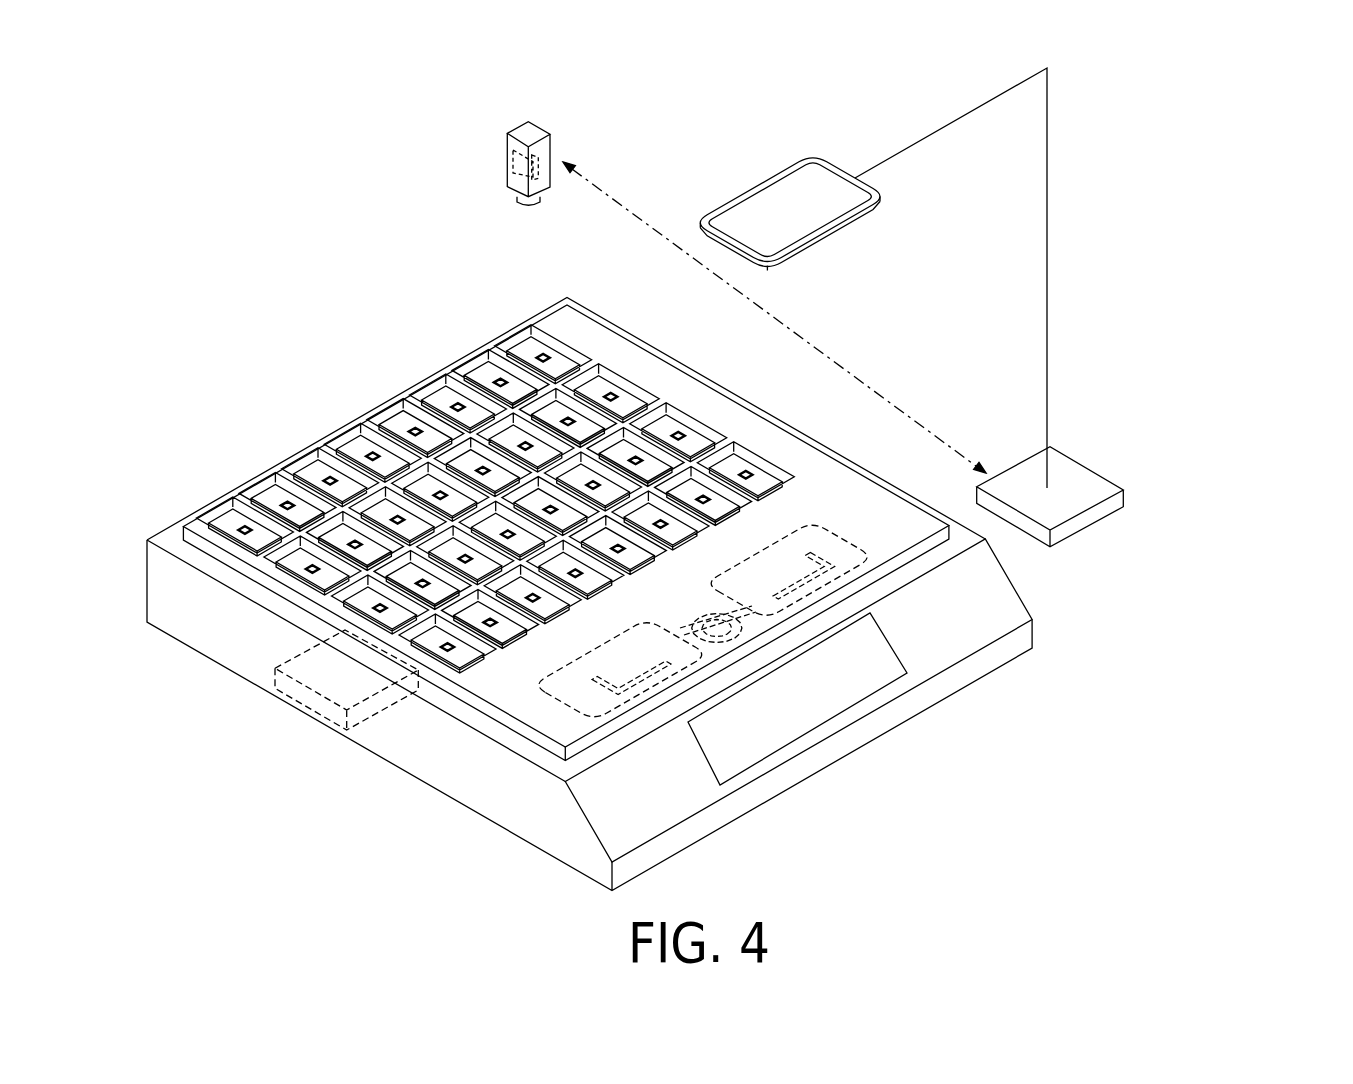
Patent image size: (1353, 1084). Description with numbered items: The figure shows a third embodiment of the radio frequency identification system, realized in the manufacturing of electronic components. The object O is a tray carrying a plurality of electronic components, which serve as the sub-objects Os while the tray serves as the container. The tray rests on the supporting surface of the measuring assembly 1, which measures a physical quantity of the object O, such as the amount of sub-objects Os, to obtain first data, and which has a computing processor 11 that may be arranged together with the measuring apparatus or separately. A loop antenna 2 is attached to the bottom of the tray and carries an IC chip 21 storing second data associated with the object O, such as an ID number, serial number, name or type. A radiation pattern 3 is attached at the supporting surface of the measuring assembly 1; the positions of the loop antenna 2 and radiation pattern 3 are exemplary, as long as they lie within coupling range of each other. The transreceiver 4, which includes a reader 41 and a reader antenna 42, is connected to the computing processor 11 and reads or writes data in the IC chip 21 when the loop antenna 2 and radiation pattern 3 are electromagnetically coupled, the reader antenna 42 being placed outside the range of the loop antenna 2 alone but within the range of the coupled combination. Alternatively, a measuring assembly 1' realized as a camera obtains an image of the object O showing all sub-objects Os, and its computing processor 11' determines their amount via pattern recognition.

The measuring assembly 1 is at (589, 594).
The computing processor 11 is at (331, 694).
The measuring assembly 1' is at (507, 128).
The computing processor 11' is at (485, 159).
The loop antenna 2 is at (720, 650).
The IC chip 21 is at (742, 628).
The radiation pattern 3 is at (850, 582).
The transreceiver 4 is at (1018, 326).
The reader 41 is at (1136, 522).
The reader antenna 42 is at (832, 165).
The object O is at (467, 499).
The sub-objects Os is at (233, 524).